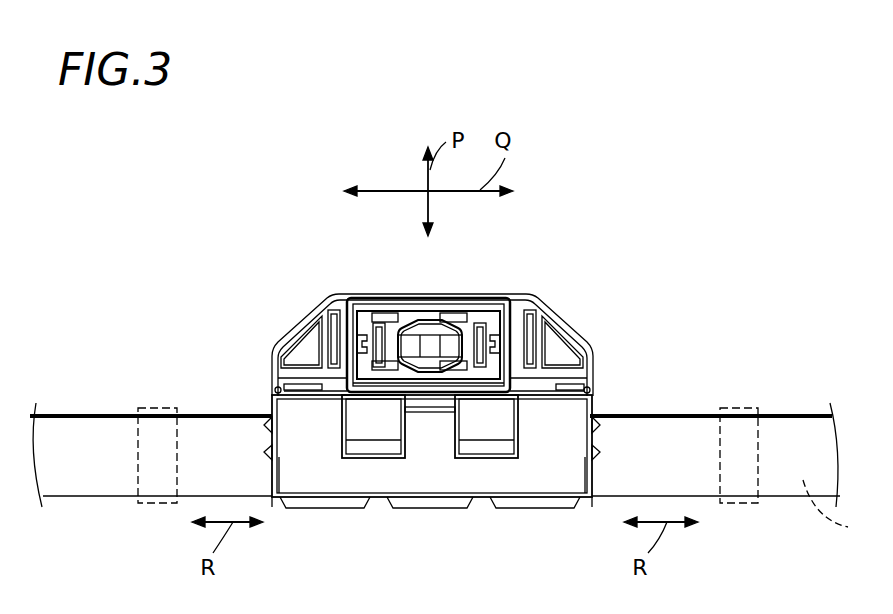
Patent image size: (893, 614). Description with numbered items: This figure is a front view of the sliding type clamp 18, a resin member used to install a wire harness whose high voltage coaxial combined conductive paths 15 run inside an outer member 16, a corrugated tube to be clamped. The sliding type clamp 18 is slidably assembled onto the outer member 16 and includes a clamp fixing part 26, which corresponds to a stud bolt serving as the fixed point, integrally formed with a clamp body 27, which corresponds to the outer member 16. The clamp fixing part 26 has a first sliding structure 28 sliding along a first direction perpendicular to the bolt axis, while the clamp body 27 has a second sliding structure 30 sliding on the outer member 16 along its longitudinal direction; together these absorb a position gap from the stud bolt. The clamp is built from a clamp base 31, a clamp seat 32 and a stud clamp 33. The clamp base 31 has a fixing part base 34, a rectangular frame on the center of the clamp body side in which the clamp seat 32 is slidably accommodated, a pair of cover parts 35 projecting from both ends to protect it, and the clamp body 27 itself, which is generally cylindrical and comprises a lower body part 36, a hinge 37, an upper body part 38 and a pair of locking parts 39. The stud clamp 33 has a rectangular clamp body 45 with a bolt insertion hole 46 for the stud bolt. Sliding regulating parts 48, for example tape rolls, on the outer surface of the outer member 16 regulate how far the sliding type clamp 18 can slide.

The high voltage coaxial combined conductive path 15 is at (834, 520).
The outer member 16 is at (795, 425).
The sliding type clamp 18 is at (565, 321).
The clamp fixing part 26 is at (468, 297).
The clamp body 27 is at (588, 432).
The first sliding structure 28 is at (481, 397).
The second sliding structure 30 is at (262, 438).
The clamp base 31 is at (270, 382).
The clamp seat 32 is at (350, 297).
The stud clamp 33 is at (388, 297).
The fixing part base 34 is at (324, 342).
The cover part 35 is at (277, 345).
The lower body part 36 is at (487, 505).
The hinge 37 is at (434, 508).
The upper body part 38 is at (382, 500).
The locking part 39 is at (583, 385).
The clamp body 45 is at (480, 312).
The bolt insertion hole 46 is at (432, 340).
The sliding regulating part 48 is at (145, 460).